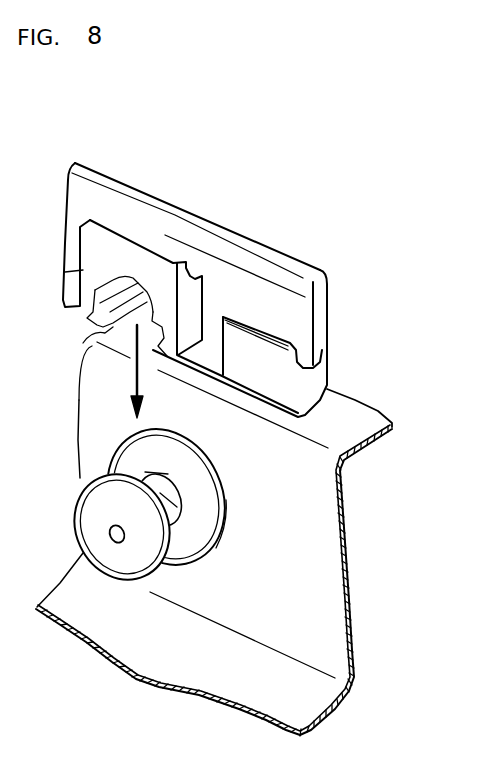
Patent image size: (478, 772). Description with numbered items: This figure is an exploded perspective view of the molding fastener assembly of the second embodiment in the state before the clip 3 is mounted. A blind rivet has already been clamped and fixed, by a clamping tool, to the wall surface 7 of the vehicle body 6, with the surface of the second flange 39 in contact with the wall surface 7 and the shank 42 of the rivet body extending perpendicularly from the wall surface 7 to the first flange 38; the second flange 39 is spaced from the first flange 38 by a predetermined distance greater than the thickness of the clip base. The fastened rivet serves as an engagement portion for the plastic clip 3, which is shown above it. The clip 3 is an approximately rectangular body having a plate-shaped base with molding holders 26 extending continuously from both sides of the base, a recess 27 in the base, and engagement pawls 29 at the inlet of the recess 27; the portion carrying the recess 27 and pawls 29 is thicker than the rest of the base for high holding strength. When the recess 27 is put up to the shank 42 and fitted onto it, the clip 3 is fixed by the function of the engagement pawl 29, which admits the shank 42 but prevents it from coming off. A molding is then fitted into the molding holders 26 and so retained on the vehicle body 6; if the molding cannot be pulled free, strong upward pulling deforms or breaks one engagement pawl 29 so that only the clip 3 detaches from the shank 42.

The clip 3 is at (300, 250).
The molding holder 26 is at (292, 330).
The recess 27 is at (93, 314).
The engagement pawl 29 is at (75, 347).
The first flange 38 is at (77, 508).
The second flange 39 is at (212, 484).
The shank 42 is at (108, 453).
The wall surface 7 is at (348, 586).
The vehicle body 6 is at (170, 693).